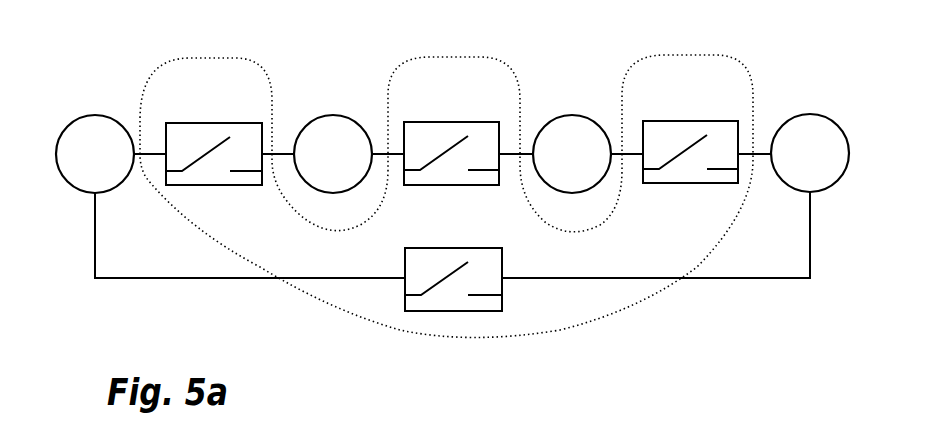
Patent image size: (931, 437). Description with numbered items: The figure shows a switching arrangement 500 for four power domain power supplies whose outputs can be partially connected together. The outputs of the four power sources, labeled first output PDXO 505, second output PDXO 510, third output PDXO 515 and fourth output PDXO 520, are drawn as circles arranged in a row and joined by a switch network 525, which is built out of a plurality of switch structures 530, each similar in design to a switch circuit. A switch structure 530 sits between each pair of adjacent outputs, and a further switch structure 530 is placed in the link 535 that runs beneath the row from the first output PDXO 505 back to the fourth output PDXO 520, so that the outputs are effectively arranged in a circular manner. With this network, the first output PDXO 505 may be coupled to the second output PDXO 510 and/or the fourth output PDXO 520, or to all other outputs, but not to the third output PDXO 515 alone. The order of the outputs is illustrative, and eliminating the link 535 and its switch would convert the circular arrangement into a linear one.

The optical network ring 500 is at (133, 60).
The output PDXO 1 505 is at (98, 115).
The output PDXO 2 510 is at (342, 115).
The output PDXO 3 515 is at (577, 115).
The output PDXO 4 520 is at (815, 113).
The switch network 525 is at (402, 82).
The switch structure 530 is at (210, 122).
The link 535 is at (178, 278).